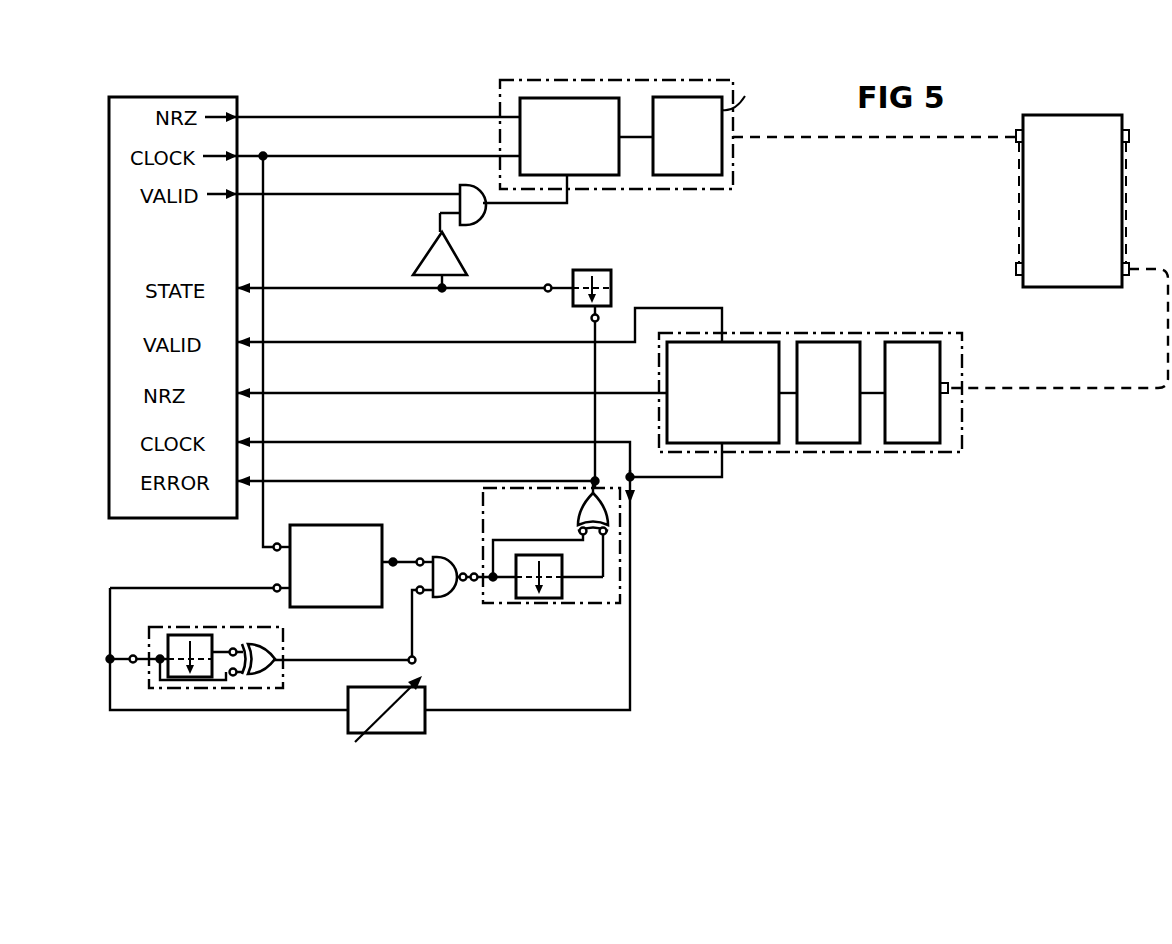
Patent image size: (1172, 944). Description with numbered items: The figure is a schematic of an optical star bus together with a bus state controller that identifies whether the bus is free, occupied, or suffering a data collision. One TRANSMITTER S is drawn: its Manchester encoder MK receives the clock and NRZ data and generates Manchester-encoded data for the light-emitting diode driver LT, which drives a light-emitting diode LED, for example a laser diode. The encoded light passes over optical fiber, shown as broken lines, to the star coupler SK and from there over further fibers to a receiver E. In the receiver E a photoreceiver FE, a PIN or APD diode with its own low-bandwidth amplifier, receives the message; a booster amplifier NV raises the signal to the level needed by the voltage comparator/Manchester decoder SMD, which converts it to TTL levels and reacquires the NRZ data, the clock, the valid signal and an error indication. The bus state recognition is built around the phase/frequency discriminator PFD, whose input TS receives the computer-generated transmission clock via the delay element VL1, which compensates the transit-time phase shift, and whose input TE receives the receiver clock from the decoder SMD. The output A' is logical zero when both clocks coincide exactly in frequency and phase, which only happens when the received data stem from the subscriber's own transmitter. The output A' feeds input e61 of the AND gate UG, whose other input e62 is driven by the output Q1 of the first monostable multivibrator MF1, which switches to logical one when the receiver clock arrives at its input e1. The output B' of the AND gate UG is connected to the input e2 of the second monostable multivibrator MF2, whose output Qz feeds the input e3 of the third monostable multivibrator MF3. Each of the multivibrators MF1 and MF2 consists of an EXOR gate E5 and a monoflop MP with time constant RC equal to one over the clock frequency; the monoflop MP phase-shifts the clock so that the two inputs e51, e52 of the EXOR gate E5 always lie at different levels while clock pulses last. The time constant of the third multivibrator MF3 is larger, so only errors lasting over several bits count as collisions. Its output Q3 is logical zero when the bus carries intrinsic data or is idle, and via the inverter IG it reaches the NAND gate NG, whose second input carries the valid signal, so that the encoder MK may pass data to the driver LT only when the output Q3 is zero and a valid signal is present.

The transmitter TRANSMITTER is at (655, 80).
The Manchester encoder MK is at (530, 108).
The light-emitting diode LED is at (755, 164).
The light-emitting diode driver LT is at (744, 97).
The transmitter S is at (735, 130).
The star coupler SK is at (1070, 115).
The NAND gate NG is at (478, 218).
The inverter IG is at (458, 258).
The output of third monostable multivibrator Q3 is at (554, 276).
The third monostable multivibrator MF3 is at (702, 280).
The input of third monostable multivibrator e3 is at (590, 320).
The receiver E is at (878, 455).
The voltage comparator/Manchester decoder SMD is at (745, 342).
The booster amplifier NV is at (820, 443).
The photoreceiver FE is at (915, 312).
The phase/frequency discriminator PFD is at (385, 440).
The input for transmission clock TS is at (276, 534).
The input for receiver clock TE is at (276, 575).
The output of phase/frequency discriminator A' is at (399, 549).
The input of AND gate e61 is at (424, 549).
The AND gate UG is at (447, 557).
The output of AND gate B' is at (464, 564).
The input of second monostable multivibrator e2 is at (487, 591).
The input of AND gate e62 is at (432, 622).
The output of first monostable multivibrator Q1 is at (344, 650).
The second monostable multivibrator MF2 is at (500, 488).
The output of second monostable multivibrator Qz is at (615, 464).
The monoflop MP is at (562, 590).
The EXOR gate E5 is at (585, 505).
The first input of EXOR gate e51 is at (399, 583).
The second input of EXOR gate e52 is at (225, 690).
The first monostable multivibrator MF1 is at (192, 627).
The input of first monostable multivibrator e1 is at (144, 644).
The delay element VL1 is at (348, 715).